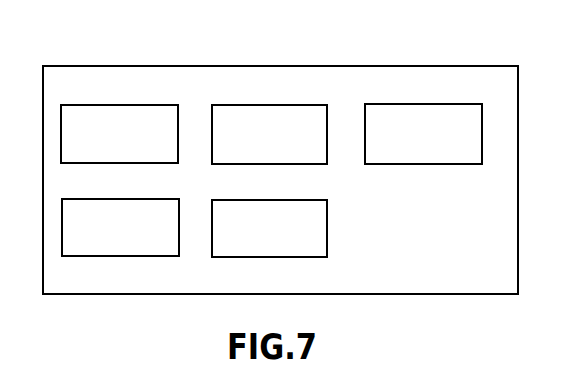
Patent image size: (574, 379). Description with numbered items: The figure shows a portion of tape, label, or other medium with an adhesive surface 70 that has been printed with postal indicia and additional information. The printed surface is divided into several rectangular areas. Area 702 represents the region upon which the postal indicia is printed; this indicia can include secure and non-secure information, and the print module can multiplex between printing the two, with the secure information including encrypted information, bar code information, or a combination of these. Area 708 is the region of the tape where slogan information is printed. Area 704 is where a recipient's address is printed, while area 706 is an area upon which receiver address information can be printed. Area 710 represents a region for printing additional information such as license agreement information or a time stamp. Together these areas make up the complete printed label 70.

The tape or label with an adhesive surface 70 is at (343, 53).
The postal indicia area 702 is at (423, 134).
The recipient's address area 704 is at (269, 228).
The receiver address information area 706 is at (119, 134).
The slogan information area 708 is at (269, 134).
The additional information area 710 is at (120, 227).